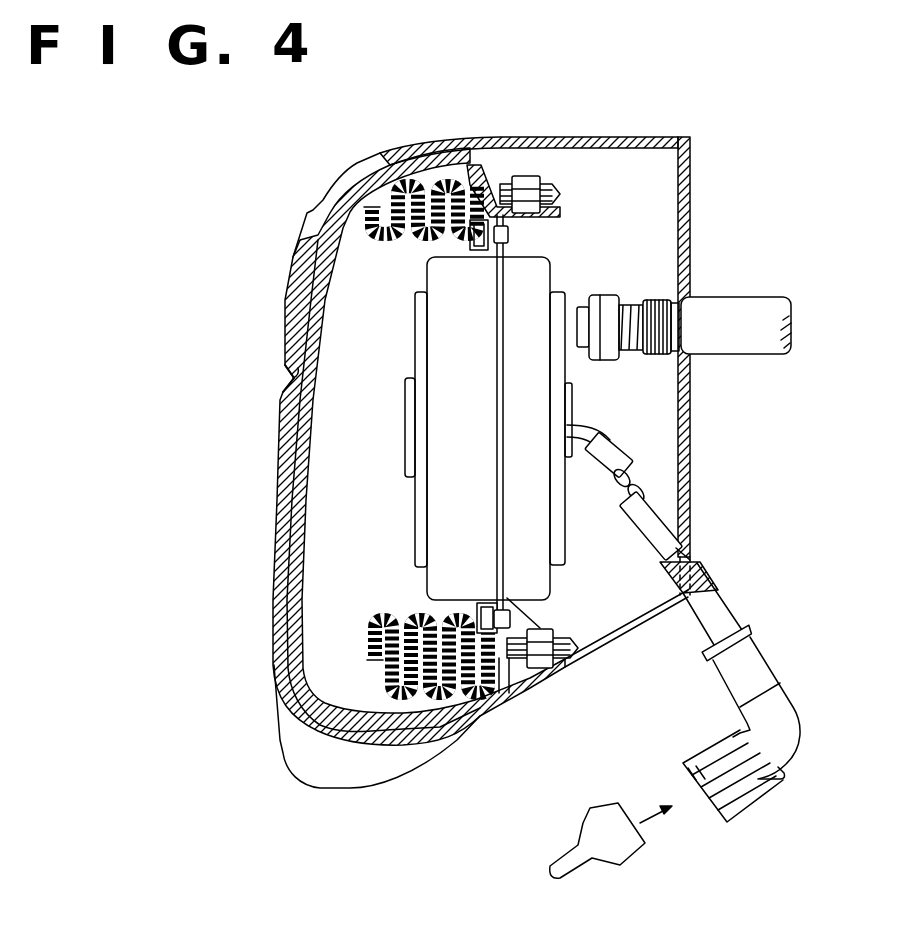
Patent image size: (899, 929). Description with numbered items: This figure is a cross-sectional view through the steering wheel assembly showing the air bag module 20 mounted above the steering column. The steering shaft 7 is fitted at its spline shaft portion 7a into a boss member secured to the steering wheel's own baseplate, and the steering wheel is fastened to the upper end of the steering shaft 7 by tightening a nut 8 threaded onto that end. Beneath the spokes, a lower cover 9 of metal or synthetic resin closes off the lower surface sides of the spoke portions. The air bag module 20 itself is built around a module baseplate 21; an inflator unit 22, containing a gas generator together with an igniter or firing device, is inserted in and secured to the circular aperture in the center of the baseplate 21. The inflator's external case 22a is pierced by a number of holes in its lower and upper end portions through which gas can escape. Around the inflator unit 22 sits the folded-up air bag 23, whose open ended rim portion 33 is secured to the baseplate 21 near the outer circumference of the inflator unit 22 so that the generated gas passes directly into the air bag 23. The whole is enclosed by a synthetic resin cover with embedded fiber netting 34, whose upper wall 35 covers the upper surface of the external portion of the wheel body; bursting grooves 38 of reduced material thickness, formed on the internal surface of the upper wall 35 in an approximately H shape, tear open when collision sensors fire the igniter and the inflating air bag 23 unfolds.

The air bag module 20 is at (590, 218).
The steering shaft 7 is at (770, 297).
The spline shaft portion 7a is at (657, 298).
The nut 8 is at (607, 362).
The lower cover 9 is at (690, 440).
The inflator unit 22 is at (413, 302).
The external case 22a is at (447, 422).
The air bag 23 is at (370, 632).
The open ended rim portion 33 is at (457, 606).
The fiber netting 34 is at (275, 500).
The upper wall 35 is at (275, 527).
The bursting grooves 38 is at (283, 368).
The baseplate 21 is at (513, 616).